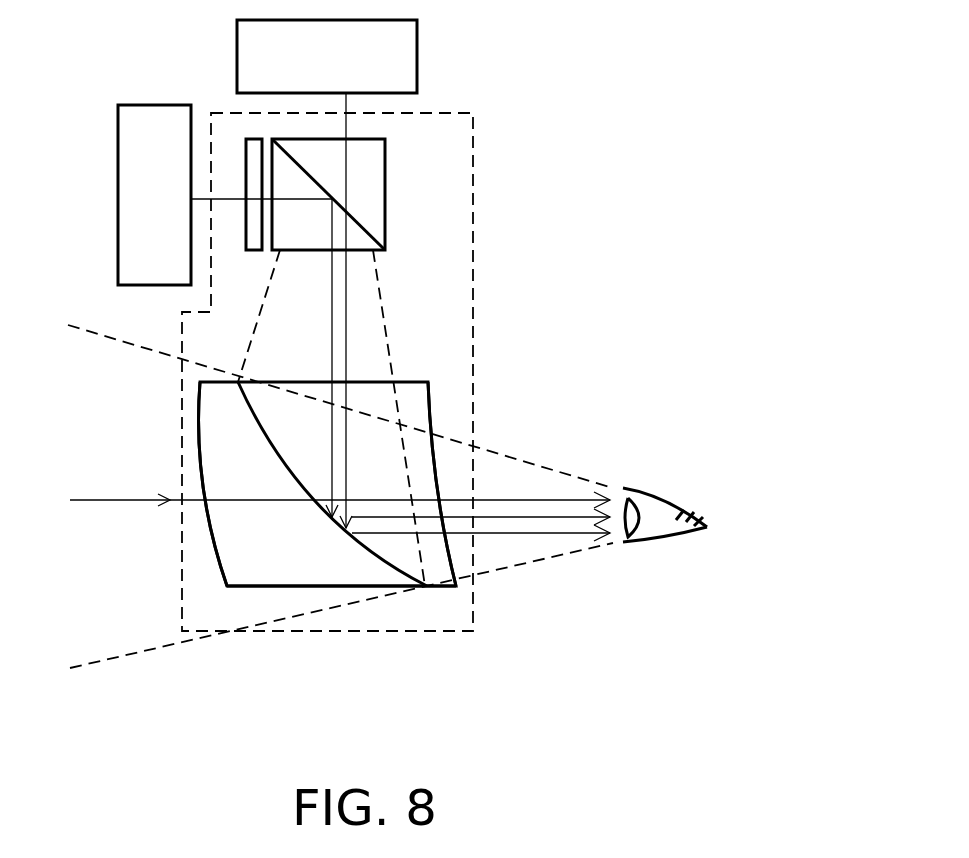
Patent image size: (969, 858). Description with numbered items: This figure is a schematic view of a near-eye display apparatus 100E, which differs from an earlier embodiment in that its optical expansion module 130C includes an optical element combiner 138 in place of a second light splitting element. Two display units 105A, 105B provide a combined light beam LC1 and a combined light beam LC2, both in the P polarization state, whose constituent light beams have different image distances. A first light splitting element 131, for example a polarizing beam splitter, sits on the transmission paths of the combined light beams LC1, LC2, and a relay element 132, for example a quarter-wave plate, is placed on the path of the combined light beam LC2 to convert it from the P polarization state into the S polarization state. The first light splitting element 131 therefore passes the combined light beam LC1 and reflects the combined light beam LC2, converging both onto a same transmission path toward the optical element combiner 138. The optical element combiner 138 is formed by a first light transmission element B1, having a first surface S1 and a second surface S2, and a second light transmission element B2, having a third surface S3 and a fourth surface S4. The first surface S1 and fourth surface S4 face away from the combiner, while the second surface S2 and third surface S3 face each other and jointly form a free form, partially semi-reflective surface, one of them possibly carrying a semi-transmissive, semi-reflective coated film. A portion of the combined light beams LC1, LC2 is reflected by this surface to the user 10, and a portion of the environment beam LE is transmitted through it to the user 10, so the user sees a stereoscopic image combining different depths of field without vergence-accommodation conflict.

The display unit 105A is at (405, 58).
The display unit 105B is at (135, 186).
The combined light beam LC1 is at (353, 123).
The combined light beam LC2 is at (252, 150).
The relay element 132 is at (222, 197).
The first light splitting element 131 is at (385, 212).
The optical expansion module 130C is at (473, 320).
The optical element combiner 138 is at (428, 390).
The first surface S1 is at (452, 560).
The second surface S2 is at (397, 568).
The third surface S3 is at (278, 446).
The fourth surface S4 is at (212, 546).
The first light transmission element B1 is at (383, 452).
The second light transmission element B2 is at (290, 568).
The environment beam LE is at (340, 483).
The user 10 is at (677, 488).
The near-eye display apparatus 100E is at (724, 745).